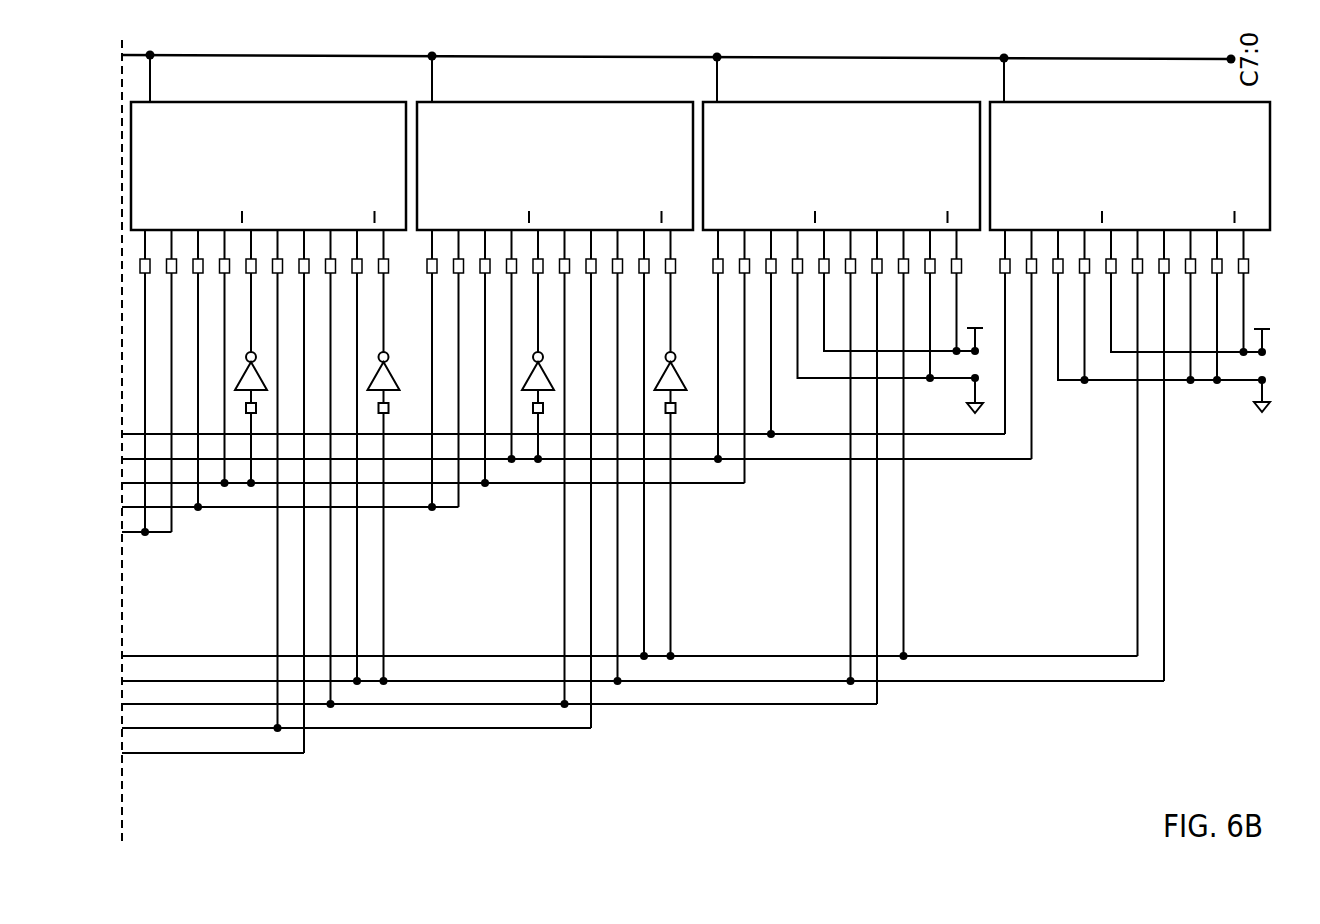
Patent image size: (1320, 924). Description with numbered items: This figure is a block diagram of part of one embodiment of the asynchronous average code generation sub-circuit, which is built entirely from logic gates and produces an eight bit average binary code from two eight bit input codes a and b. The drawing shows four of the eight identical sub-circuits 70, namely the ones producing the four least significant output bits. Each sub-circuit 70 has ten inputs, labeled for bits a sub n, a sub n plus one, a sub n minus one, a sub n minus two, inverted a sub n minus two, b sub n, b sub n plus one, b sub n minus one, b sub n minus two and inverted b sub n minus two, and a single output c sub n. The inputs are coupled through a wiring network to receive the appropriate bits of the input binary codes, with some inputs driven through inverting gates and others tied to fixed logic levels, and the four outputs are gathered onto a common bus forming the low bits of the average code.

The sub-circuit 70 is at (695, 402).